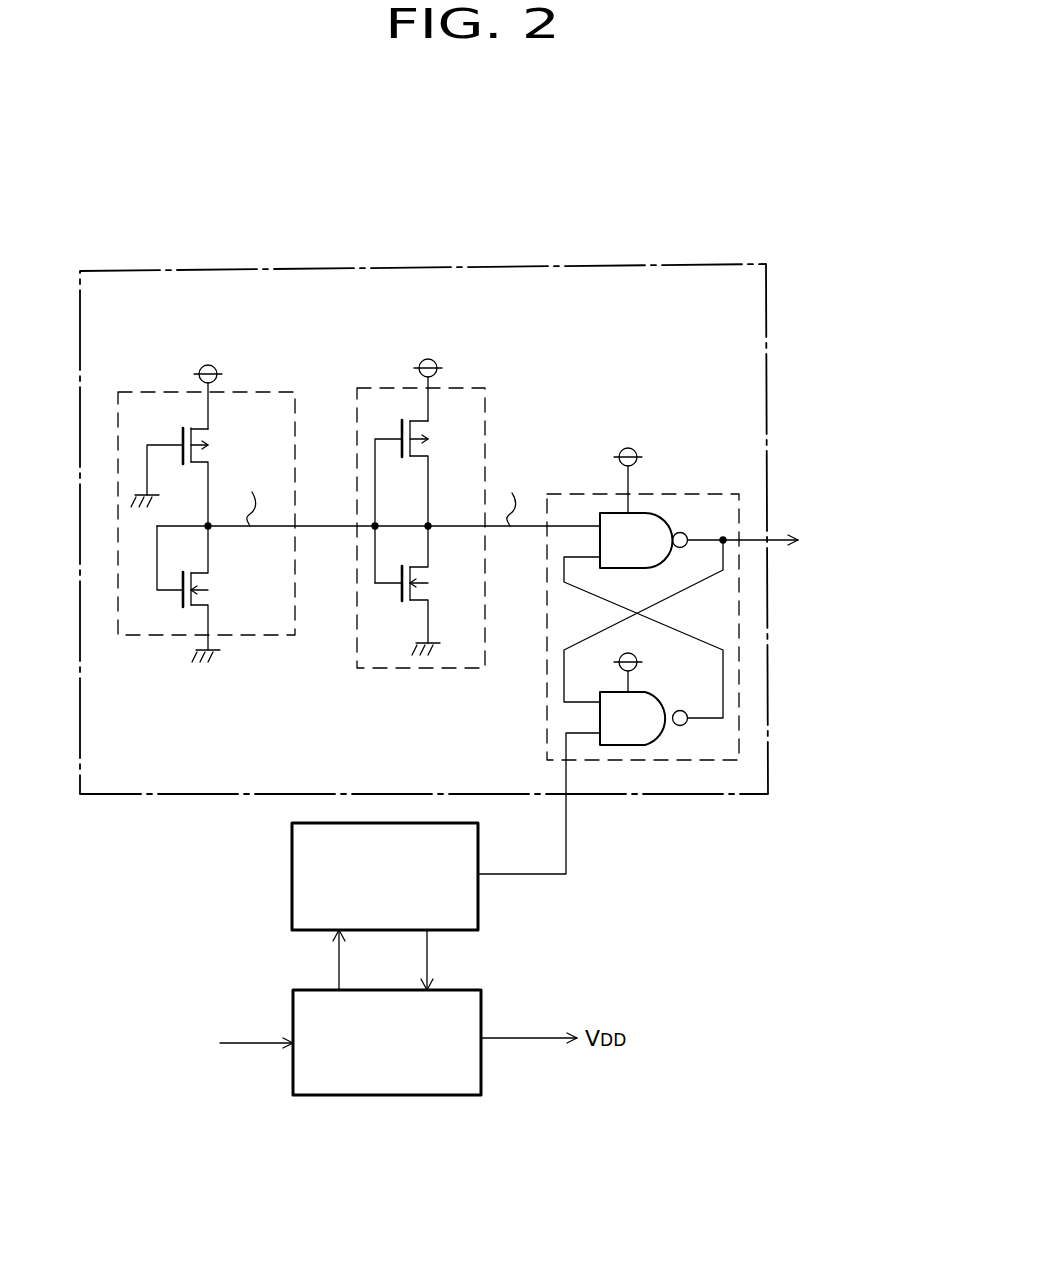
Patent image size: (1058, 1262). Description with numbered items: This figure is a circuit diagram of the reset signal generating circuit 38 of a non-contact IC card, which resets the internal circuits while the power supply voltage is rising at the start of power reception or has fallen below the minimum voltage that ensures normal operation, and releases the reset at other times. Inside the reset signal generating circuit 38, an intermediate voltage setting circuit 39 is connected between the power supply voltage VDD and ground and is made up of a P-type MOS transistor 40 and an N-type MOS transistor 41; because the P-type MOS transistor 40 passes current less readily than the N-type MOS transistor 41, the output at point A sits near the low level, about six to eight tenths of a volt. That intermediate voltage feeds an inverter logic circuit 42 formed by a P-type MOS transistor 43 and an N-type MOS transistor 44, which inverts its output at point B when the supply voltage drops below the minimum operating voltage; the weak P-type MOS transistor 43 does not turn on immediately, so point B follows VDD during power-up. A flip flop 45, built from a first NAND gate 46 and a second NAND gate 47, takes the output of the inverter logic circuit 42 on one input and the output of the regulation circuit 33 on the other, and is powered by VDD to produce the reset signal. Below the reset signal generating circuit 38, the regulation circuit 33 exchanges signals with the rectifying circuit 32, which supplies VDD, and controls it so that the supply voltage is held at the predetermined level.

The reset signal generating circuit 38 is at (612, 264).
The intermediate voltage setting circuit 39 is at (219, 497).
The P-type MOS transistor 40 is at (210, 446).
The N-type MOS transistor 41 is at (206, 589).
The inverter logic circuit 42 is at (446, 498).
The P-type MOS transistor 43 is at (418, 439).
The N-type MOS transistor 44 is at (420, 583).
The flip flop 45 is at (647, 589).
The first NAND gate 46 is at (662, 513).
The second NAND gate 47 is at (656, 692).
The regulation circuit 33 is at (480, 916).
The rectifying circuit 32 is at (483, 1013).